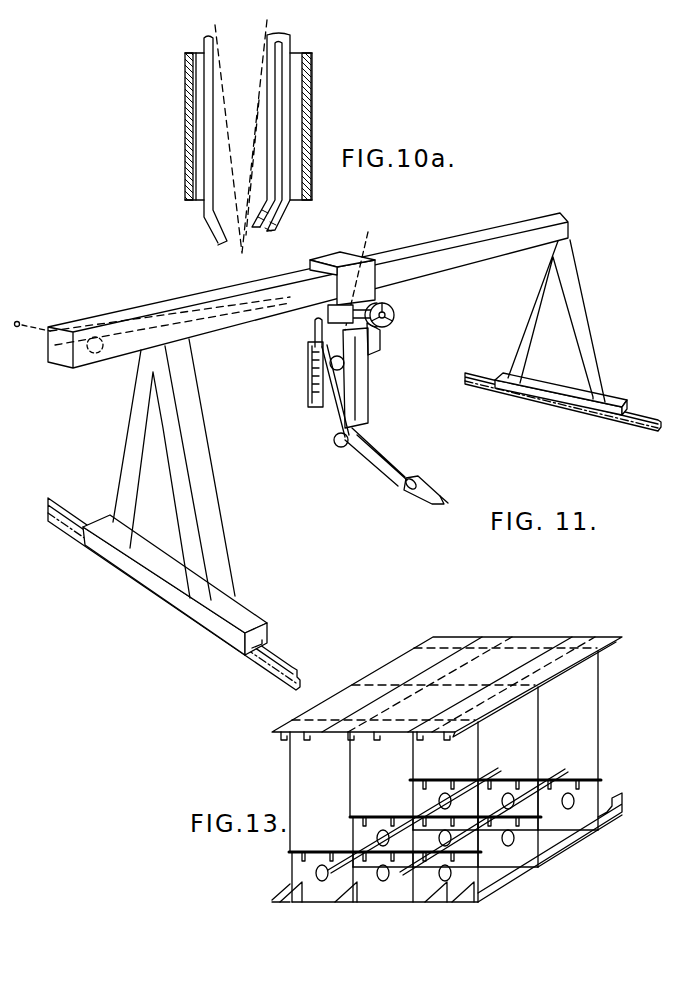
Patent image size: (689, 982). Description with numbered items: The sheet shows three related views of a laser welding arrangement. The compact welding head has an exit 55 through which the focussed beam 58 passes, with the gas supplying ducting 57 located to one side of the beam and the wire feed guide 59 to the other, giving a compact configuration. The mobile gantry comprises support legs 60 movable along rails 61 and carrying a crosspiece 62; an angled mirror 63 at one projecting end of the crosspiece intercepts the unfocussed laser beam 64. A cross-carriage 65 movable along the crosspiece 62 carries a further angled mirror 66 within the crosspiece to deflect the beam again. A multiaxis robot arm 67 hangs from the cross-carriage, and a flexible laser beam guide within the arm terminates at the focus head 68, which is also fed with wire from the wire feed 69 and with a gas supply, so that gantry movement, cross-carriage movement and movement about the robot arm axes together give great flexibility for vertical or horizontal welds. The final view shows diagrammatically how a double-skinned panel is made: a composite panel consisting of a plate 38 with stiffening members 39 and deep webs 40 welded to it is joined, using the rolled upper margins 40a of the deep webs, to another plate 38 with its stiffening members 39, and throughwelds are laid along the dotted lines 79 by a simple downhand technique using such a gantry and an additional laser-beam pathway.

In FIG. 10A, the exit 55 is at (192, 168).
In FIG. 10A, the gas supplying ducting 57 is at (290, 127).
In FIG. 10A, the focussed beam 58 is at (258, 107).
In FIG. 10A, the wire feed guide 59 is at (207, 218).
In FIG. 11, the support legs 60 is at (138, 502).
In FIG. 11, the rails 61 is at (285, 655).
In FIG. 11, the crosspiece 62 is at (470, 235).
In FIG. 11, the angled mirror 63 is at (97, 337).
In FIG. 11, the unfocussed laser beam 64 is at (33, 323).
In FIG. 11, the cross-carriage 65 is at (333, 257).
In FIG. 11, the angled mirror 66 is at (364, 270).
In FIG. 11, the multiaxis robot arm 67 is at (372, 382).
In FIG. 11, the focus head 68 is at (418, 498).
In FIG. 11, the wire feed 69 is at (393, 312).
In FIG. 13, the plate 38 is at (583, 640).
In FIG. 13, the stiffening members 39 is at (310, 735).
In FIG. 13, the deep webs 40 is at (593, 798).
In FIG. 13, the rolled upper margins 40a is at (510, 780).
In FIG. 13, the dotted lines 79 is at (438, 650).